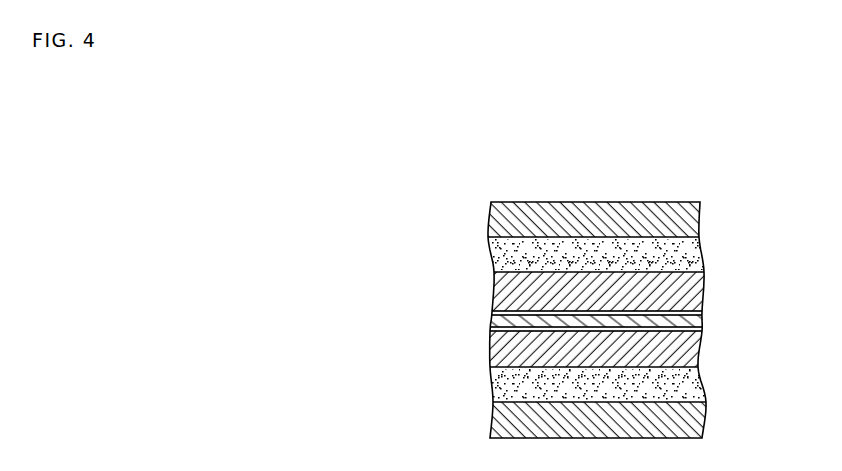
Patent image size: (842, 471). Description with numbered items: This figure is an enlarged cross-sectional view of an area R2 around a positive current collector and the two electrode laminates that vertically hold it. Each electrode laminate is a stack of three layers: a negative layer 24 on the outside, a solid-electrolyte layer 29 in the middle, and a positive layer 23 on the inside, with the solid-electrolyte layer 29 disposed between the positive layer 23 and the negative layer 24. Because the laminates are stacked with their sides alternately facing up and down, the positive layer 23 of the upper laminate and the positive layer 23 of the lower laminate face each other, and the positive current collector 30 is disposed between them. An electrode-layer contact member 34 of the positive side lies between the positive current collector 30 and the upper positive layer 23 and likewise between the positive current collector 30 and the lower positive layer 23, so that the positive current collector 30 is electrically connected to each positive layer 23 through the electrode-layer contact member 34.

The negative layer 24 is at (700, 220).
The solid-electrolyte layer 29 is at (700, 255).
The positive layer 23 is at (704, 290).
The positive current collector 30 is at (491, 320).
The electrode-layer contact member 34 is at (492, 310).
The area R2 is at (442, 194).